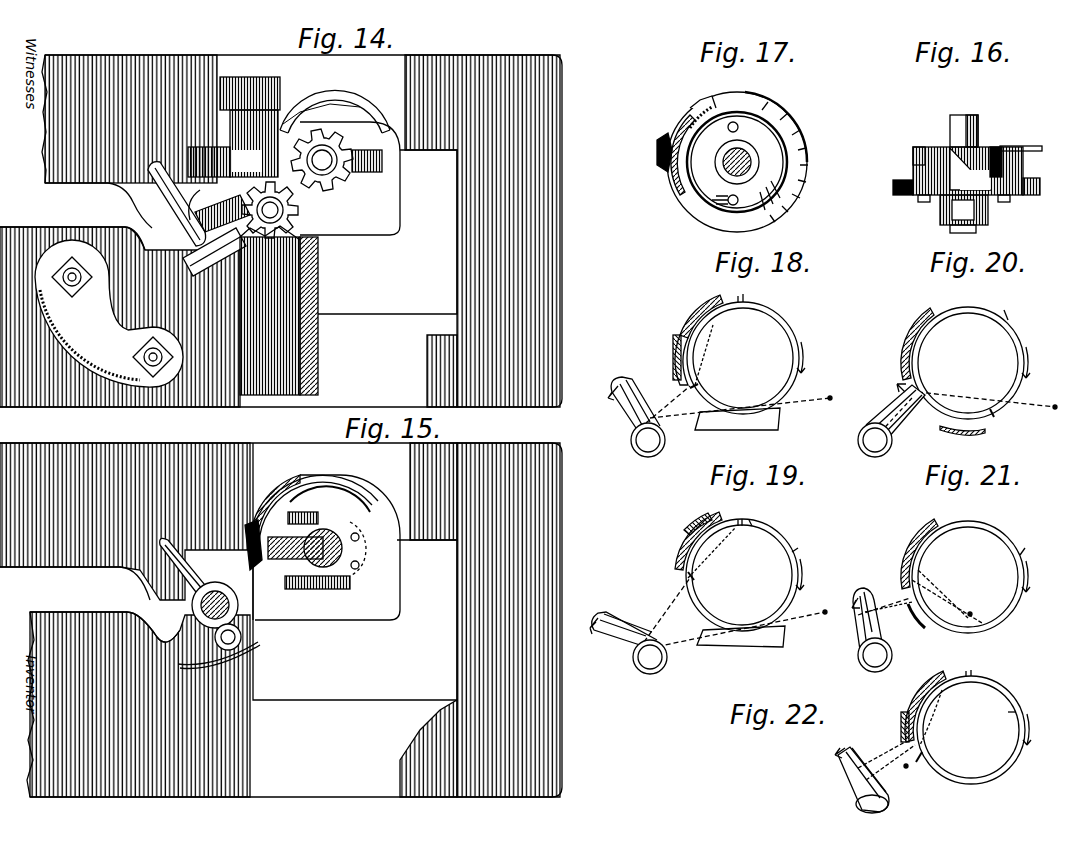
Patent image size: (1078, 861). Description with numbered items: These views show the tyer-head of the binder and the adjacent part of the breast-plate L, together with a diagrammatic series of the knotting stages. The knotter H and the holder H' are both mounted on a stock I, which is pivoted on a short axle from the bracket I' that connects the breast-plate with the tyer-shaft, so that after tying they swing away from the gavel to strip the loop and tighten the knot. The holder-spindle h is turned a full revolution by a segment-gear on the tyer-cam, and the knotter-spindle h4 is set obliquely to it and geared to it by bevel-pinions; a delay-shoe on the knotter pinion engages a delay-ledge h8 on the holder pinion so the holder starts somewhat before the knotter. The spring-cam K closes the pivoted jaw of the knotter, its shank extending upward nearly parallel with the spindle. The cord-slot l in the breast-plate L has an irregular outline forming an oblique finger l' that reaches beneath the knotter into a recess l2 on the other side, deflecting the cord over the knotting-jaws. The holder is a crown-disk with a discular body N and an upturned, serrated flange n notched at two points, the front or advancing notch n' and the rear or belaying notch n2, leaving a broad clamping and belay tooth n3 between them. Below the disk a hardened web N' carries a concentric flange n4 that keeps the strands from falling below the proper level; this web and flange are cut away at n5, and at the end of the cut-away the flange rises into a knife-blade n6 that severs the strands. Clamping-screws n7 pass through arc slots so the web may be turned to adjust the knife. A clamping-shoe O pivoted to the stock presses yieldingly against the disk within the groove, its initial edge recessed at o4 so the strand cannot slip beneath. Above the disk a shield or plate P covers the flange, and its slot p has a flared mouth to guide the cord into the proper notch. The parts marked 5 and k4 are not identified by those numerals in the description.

In FIG. 14, the breast-plate L is at (281, 231).
In FIG. 15, the breast-plate L is at (281, 620).
In FIG. 14, the cord-slot l is at (36, 211).
In FIG. 15, the cord-slot l is at (38, 593).
In FIG. 14, the oblique finger l' is at (154, 204).
In FIG. 15, the oblique finger l' is at (179, 569).
In FIG. 14, the recess l2 is at (153, 238).
In FIG. 15, the recess l2 is at (165, 624).
In FIG. 14, the stock I is at (234, 127).
In FIG. 14, the bracket I' is at (287, 310).
In FIG. 14, the pin 5 is at (249, 99).
In FIG. 14, the upturned flange n is at (308, 107).
In FIG. 15, the upturned flange n is at (348, 539).
In FIG. 17, the upturned flange n is at (784, 167).
In FIG. 16, the upturned flange n is at (1031, 175).
In FIG. 20, the upturned flange n is at (1003, 311).
In FIG. 19, the upturned flange n is at (797, 550).
In FIG. 21, the upturned flange n is at (1023, 547).
In FIG. 22, the upturned flange n is at (1006, 713).
In FIG. 14, the front or advancing notch n' is at (335, 101).
In FIG. 15, the front or advancing notch n' is at (303, 515).
In FIG. 17, the front or advancing notch n' is at (706, 93).
In FIG. 16, the front or advancing notch n' is at (907, 157).
In FIG. 18, the front or advancing notch n' is at (735, 289).
In FIG. 20, the front or advancing notch n' is at (929, 373).
In FIG. 19, the front or advancing notch n' is at (754, 535).
In FIG. 21, the front or advancing notch n' is at (938, 555).
In FIG. 22, the front or advancing notch n' is at (964, 666).
In FIG. 15, the rear or belaying notch n2 is at (305, 592).
In FIG. 17, the rear or belaying notch n2 is at (710, 184).
In FIG. 16, the rear or belaying notch n2 is at (1016, 150).
In FIG. 18, the rear or belaying notch n2 is at (696, 386).
In FIG. 20, the rear or belaying notch n2 is at (996, 410).
In FIG. 19, the rear or belaying notch n2 is at (692, 575).
In FIG. 21, the rear or belaying notch n2 is at (982, 604).
In FIG. 22, the rear or belaying notch n2 is at (920, 748).
In FIG. 17, the broad tooth n3 is at (712, 158).
In FIG. 18, the broad tooth n3 is at (700, 338).
In FIG. 20, the broad tooth n3 is at (960, 412).
In FIG. 19, the broad tooth n3 is at (715, 542).
In FIG. 21, the broad tooth n3 is at (935, 624).
In FIG. 22, the broad tooth n3 is at (918, 718).
In FIG. 15, the concentric flange n4 is at (380, 505).
In FIG. 17, the concentric flange n4 is at (793, 142).
In FIG. 16, the concentric flange n4 is at (1042, 190).
In FIG. 15, the cut-away portion n5 is at (292, 500).
In FIG. 17, the cut-away portion n5 is at (702, 118).
In FIG. 16, the cut-away portion n5 is at (905, 178).
In FIG. 15, the knife-blade n6 is at (249, 538).
In FIG. 17, the knife-blade n6 is at (657, 148).
In FIG. 16, the knife-blade n6 is at (905, 196).
In FIG. 18, the knife-blade n6 is at (671, 344).
In FIG. 20, the knife-blade n6 is at (938, 428).
In FIG. 19, the knife-blade n6 is at (698, 524).
In FIG. 21, the knife-blade n6 is at (904, 612).
In FIG. 22, the knife-blade n6 is at (906, 719).
In FIG. 17, the clamping-screws n7 is at (728, 126).
In FIG. 16, the clamping-screws n7 is at (924, 204).
In FIG. 15, the discular body N is at (317, 588).
In FIG. 17, the discular body N is at (737, 162).
In FIG. 16, the discular body N is at (964, 160).
In FIG. 18, the discular body N is at (746, 366).
In FIG. 20, the discular body N is at (971, 363).
In FIG. 19, the discular body N is at (745, 583).
In FIG. 21, the discular body N is at (971, 577).
In FIG. 22, the discular body N is at (974, 730).
In FIG. 15, the web N' is at (330, 486).
In FIG. 14, the holder-spindle h is at (336, 160).
In FIG. 15, the holder-spindle h is at (345, 548).
In FIG. 17, the holder-spindle h is at (737, 162).
In FIG. 16, the holder-spindle h is at (964, 174).
In FIG. 15, the knotter-spindle h4 is at (220, 592).
In FIG. 18, the knotter-spindle h4 is at (648, 440).
In FIG. 20, the knotter-spindle h4 is at (875, 440).
In FIG. 19, the knotter-spindle h4 is at (661, 657).
In FIG. 21, the knotter-spindle h4 is at (884, 655).
In FIG. 22, the knotter-spindle h4 is at (888, 806).
In FIG. 14, the delay-ledge h8 is at (322, 193).
In FIG. 14, the pinion k4 is at (270, 210).
In FIG. 14, the spring-cam K is at (222, 272).
In FIG. 15, the spring-cam K is at (245, 648).
In FIG. 14, the shield or plate P is at (350, 178).
In FIG. 15, the shield or plate P is at (326, 547).
In FIG. 16, the shield or plate P is at (996, 147).
In FIG. 15, the slot p is at (340, 594).
In FIG. 17, the clamping-shoe O is at (680, 180).
In FIG. 18, the clamping-shoe O is at (700, 326).
In FIG. 20, the clamping-shoe O is at (910, 345).
In FIG. 19, the clamping-shoe O is at (682, 563).
In FIG. 21, the clamping-shoe O is at (916, 561).
In FIG. 22, the clamping-shoe O is at (925, 706).
In FIG. 17, the recessed edge o4 is at (690, 186).
In FIG. 18, the recessed edge o4 is at (688, 384).
In FIG. 18, the knotter H is at (714, 410).
In FIG. 20, the knotter H is at (886, 411).
In FIG. 19, the knotter H is at (708, 624).
In FIG. 21, the knotter H is at (871, 621).
In FIG. 22, the knotter H is at (864, 777).
In FIG. 16, the holder H' is at (1031, 145).